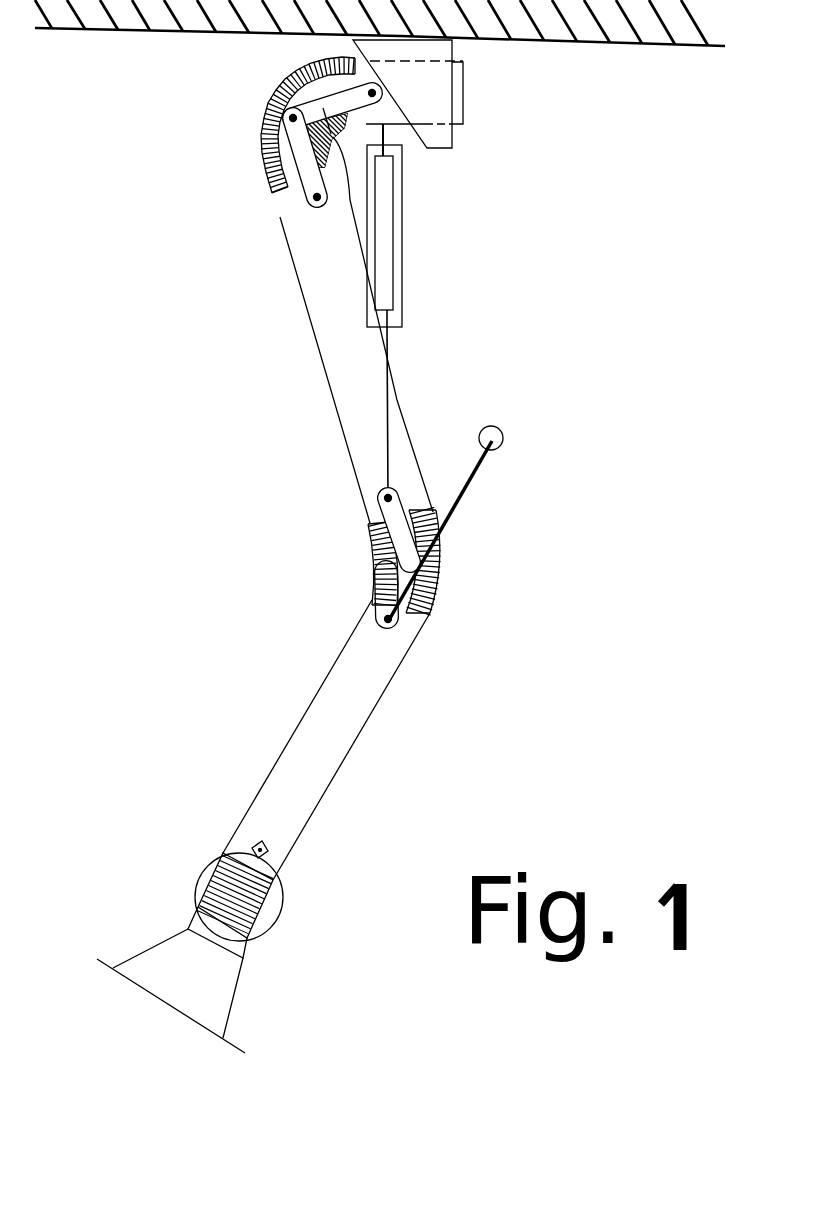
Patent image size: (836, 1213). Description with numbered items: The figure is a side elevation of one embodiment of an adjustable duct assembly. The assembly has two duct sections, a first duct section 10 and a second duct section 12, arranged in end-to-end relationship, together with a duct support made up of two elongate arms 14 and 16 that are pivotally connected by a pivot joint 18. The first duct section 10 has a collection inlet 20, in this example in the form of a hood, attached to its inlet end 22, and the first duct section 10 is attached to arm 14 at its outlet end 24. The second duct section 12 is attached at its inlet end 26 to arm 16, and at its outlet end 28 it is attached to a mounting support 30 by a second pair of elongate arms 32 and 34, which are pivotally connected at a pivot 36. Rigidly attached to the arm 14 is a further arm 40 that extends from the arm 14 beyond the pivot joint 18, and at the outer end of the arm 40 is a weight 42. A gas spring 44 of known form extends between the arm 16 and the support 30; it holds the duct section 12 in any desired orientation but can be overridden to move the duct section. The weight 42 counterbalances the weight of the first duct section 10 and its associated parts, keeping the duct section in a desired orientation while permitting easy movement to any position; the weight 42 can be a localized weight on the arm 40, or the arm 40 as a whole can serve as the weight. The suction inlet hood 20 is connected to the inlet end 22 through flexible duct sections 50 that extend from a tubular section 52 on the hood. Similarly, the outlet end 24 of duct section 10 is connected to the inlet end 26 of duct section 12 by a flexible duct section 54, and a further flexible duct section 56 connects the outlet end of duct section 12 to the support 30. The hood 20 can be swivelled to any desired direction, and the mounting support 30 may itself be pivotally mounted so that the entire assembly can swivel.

The first duct section 10 is at (296, 728).
The second duct section 12 is at (327, 371).
The elongate arm 14 is at (378, 624).
The elongate arm 16 is at (380, 500).
The pivot joint 18 is at (370, 562).
The collection inlet 20 is at (144, 993).
The inlet end 22 is at (286, 884).
The outlet end 24 is at (416, 614).
The inlet end 26 is at (437, 508).
The outlet end 28 is at (266, 176).
The mounting support 30 is at (453, 147).
The elongate arm 32 is at (282, 205).
The elongate arm 34 is at (385, 178).
The pivot connection 36 is at (280, 117).
The arm 40 is at (460, 497).
The weight 42 is at (501, 435).
The gas spring 44 is at (385, 237).
The flexible duct sections 50 is at (200, 878).
The tubular section 52 is at (243, 960).
The flexible duct section 54 is at (436, 590).
The flexible duct section 56 is at (282, 84).